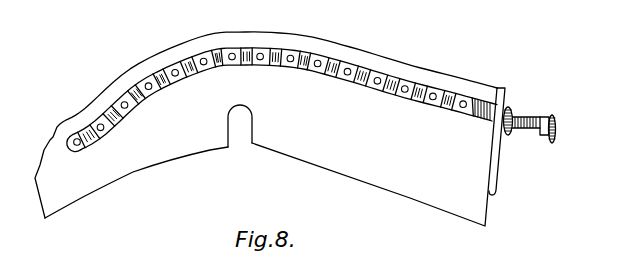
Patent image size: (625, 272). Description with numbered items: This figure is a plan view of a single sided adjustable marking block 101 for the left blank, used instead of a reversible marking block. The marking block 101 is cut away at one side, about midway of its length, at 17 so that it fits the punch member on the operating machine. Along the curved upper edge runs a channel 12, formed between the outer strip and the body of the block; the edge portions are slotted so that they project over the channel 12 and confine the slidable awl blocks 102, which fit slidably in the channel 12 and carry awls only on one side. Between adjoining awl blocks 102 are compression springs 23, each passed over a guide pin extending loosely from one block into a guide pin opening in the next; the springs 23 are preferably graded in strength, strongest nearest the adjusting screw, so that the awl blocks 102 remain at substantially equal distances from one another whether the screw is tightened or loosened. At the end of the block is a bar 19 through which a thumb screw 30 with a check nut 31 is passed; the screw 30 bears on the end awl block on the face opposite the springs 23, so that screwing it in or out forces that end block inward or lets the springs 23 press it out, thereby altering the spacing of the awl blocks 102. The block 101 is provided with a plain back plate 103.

The channel 12 is at (107, 100).
The single sided marking block 101 is at (150, 165).
The cut away 17 is at (246, 137).
The bar 19 is at (494, 165).
The slidable awl blocks 102 is at (318, 70).
The back plate 103 is at (388, 97).
The compression spring 23 is at (444, 108).
The thumb screw 30 is at (554, 131).
The check nut 31 is at (513, 105).